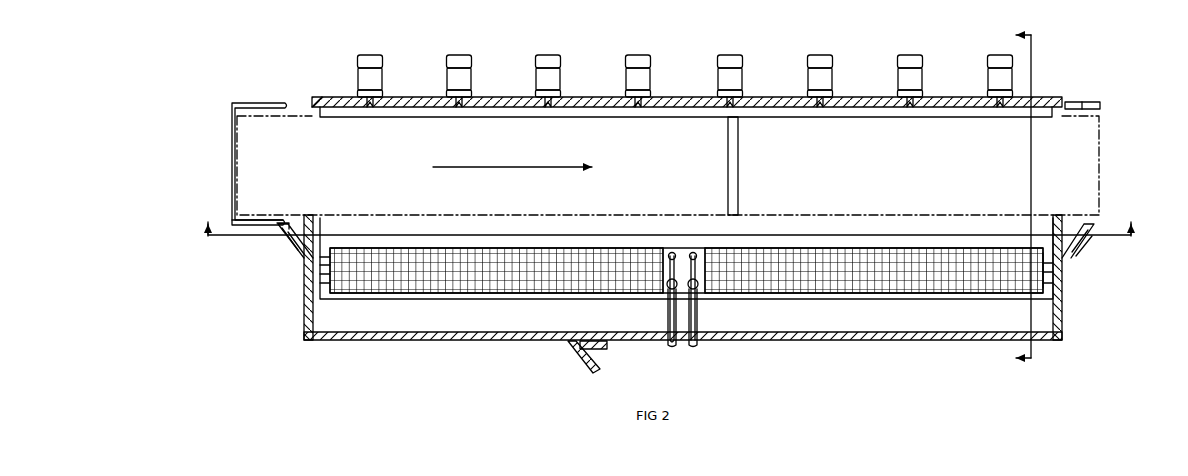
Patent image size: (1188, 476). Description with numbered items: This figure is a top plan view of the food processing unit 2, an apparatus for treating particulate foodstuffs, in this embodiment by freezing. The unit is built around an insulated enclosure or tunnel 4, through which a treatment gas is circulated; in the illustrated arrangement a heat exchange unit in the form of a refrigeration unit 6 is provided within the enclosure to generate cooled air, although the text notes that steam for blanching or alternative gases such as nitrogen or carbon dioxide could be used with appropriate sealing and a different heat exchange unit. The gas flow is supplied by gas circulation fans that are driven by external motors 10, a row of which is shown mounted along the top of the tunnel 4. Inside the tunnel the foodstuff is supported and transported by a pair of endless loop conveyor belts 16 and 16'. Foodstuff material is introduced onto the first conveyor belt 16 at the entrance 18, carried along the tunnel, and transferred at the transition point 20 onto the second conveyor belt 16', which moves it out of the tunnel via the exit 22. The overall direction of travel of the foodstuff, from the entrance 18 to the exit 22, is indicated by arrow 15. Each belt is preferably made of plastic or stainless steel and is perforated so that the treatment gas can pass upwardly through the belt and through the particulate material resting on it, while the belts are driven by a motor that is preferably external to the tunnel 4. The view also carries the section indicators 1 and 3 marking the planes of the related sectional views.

The food processing unit 2 is at (1121, 124).
The external motors 10 is at (453, 62).
The first conveyor belt 16 is at (240, 164).
The second conveyor belt 16' is at (907, 165).
The arrow indicating direction of travel 15 is at (494, 165).
The transition point 20 is at (739, 158).
The exit 22 is at (1088, 128).
The entrance 18 is at (298, 188).
The insulated enclosure or tunnel 4 is at (1036, 338).
The refrigeration unit 6 is at (1040, 283).
The section line 1- 1 is at (669, 221).
The section line 3- 3 is at (1015, 197).